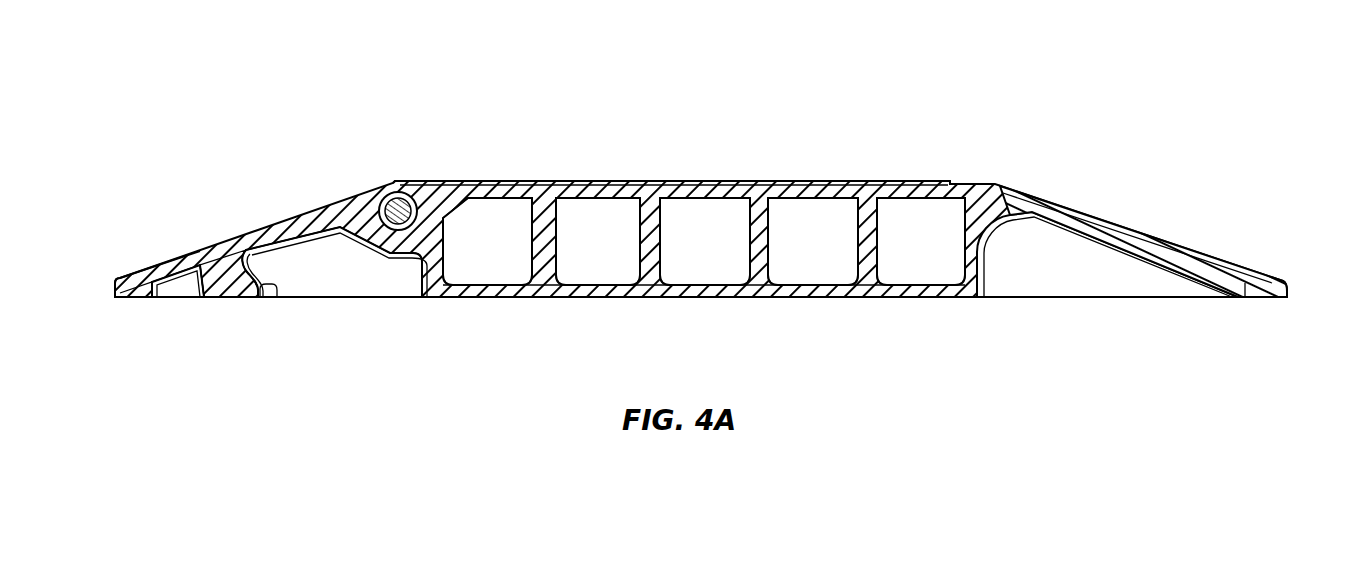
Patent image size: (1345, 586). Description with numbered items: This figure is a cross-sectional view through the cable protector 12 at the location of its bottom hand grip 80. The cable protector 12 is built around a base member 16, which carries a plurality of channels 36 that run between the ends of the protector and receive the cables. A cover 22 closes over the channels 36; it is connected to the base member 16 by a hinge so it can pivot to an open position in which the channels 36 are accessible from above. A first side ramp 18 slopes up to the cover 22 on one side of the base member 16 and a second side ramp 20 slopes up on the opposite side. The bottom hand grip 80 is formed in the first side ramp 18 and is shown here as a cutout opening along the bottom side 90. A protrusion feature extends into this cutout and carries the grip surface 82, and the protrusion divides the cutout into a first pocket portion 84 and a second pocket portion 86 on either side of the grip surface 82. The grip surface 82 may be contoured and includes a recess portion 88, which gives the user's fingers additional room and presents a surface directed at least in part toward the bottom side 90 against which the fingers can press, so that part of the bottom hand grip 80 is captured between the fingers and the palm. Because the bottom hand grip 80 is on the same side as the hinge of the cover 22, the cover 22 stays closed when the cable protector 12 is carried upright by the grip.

The cable protector 12 is at (950, 136).
The base member 16 is at (875, 298).
The first side ramp 18 is at (114, 290).
The second side ramp 20 is at (1284, 286).
The cover 22 is at (768, 184).
The channels 36 is at (705, 263).
The bottom hand grip 80 is at (229, 298).
The grip surface 82 is at (272, 298).
The first pocket portion 84 is at (181, 298).
The second pocket portion 86 is at (357, 291).
The recess portion 88 is at (248, 265).
The bottom side 90 is at (135, 298).